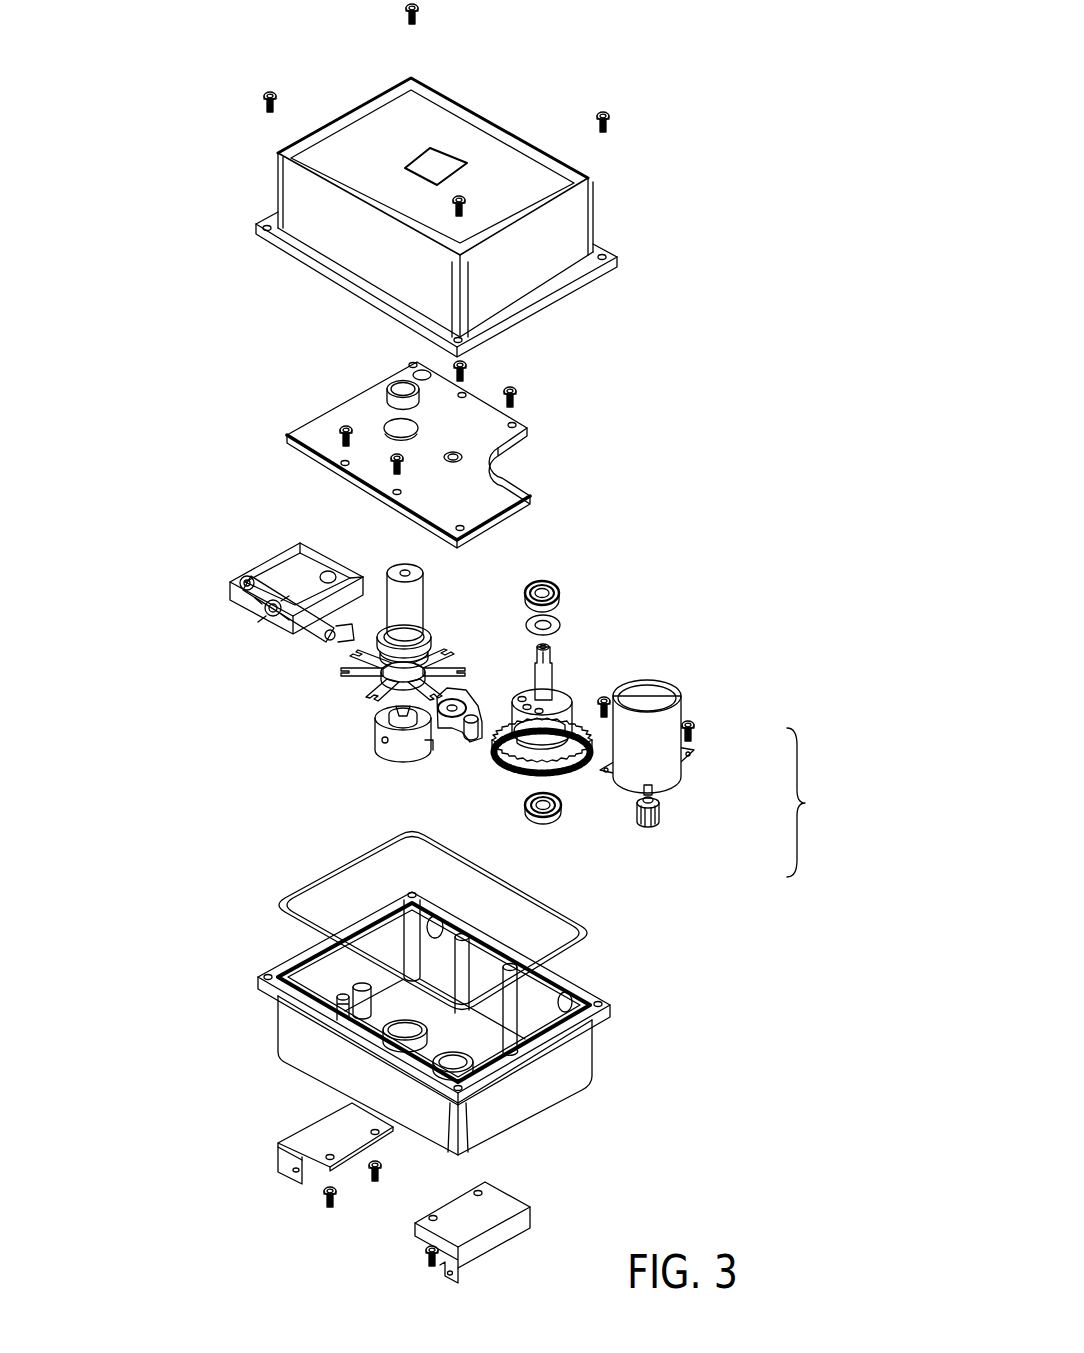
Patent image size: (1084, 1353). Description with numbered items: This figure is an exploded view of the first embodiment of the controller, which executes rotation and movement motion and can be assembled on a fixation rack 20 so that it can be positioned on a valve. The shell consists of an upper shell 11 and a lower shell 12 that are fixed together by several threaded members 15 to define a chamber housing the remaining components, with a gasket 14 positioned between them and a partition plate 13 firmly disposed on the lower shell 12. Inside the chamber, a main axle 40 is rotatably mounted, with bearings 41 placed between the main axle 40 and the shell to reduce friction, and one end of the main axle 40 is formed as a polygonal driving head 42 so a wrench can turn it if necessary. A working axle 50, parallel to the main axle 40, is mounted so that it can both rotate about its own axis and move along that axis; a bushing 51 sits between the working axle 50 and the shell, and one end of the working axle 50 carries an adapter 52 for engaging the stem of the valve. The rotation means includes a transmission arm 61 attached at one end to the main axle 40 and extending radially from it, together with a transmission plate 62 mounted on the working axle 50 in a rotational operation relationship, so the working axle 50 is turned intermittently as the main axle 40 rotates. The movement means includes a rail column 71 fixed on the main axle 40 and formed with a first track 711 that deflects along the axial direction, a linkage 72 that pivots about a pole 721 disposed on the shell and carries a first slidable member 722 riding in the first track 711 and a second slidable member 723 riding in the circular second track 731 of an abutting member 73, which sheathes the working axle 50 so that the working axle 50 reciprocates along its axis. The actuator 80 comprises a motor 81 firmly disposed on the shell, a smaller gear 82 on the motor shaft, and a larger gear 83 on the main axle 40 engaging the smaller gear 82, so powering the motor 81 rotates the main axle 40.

The upper shell 11 is at (568, 222).
The lower shell 12 is at (580, 1060).
The partition plate 13 is at (484, 485).
The gasket 14 is at (593, 932).
The threaded members 15 is at (610, 117).
The fixation rack 20 is at (517, 1230).
The main axle 40 is at (545, 680).
The bearings 41 is at (563, 593).
The driving head 42 is at (550, 647).
The working axle 50 is at (385, 712).
The bushing 51 is at (385, 384).
The adapter 52 is at (380, 737).
The transmission arm 61 is at (453, 722).
The transmission plate 62 is at (350, 677).
The rail column 71 is at (562, 702).
The first track 711 is at (567, 725).
The linkage 72 is at (318, 553).
The pole 721 is at (232, 598).
The first slidable member 722 is at (327, 647).
The second slidable member 723 is at (277, 617).
The abutting member 73 is at (410, 615).
The second track 731 is at (423, 655).
The actuator 80 is at (819, 802).
The motor 81 is at (662, 742).
The smaller gear 82 is at (660, 818).
The larger gear 83 is at (572, 775).